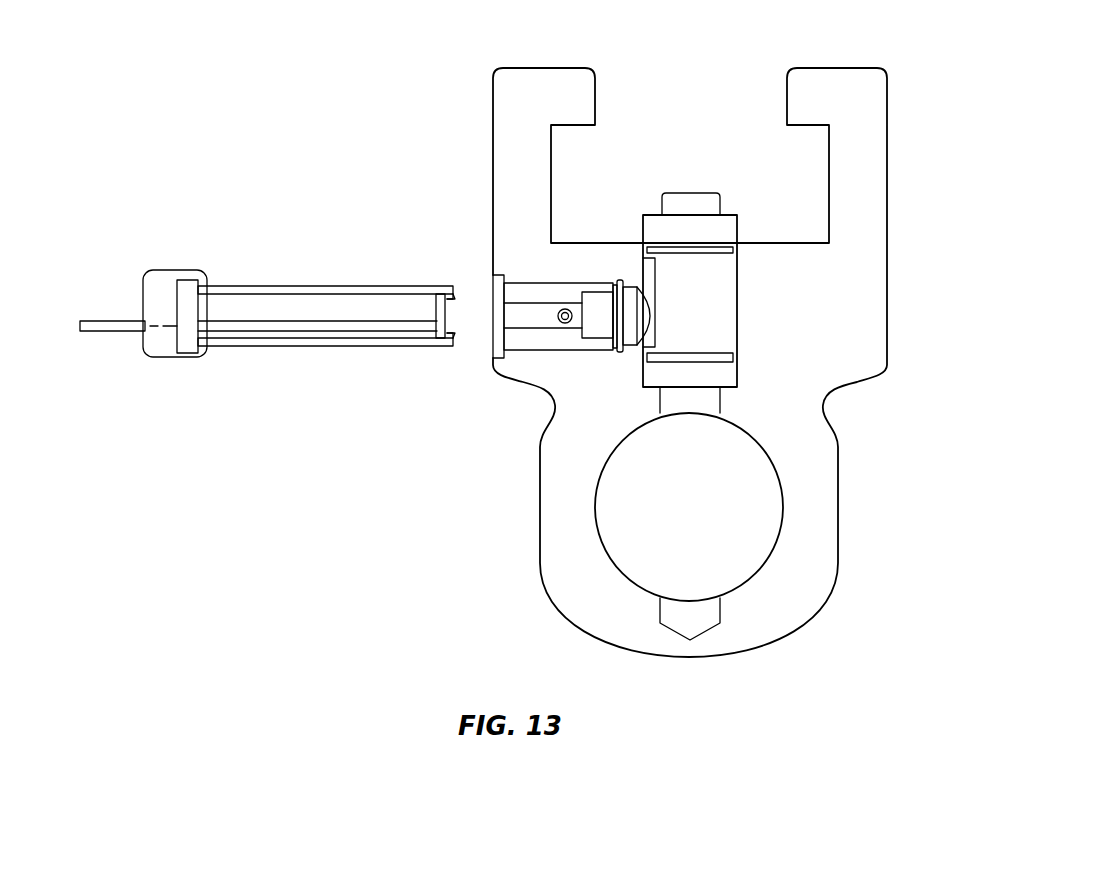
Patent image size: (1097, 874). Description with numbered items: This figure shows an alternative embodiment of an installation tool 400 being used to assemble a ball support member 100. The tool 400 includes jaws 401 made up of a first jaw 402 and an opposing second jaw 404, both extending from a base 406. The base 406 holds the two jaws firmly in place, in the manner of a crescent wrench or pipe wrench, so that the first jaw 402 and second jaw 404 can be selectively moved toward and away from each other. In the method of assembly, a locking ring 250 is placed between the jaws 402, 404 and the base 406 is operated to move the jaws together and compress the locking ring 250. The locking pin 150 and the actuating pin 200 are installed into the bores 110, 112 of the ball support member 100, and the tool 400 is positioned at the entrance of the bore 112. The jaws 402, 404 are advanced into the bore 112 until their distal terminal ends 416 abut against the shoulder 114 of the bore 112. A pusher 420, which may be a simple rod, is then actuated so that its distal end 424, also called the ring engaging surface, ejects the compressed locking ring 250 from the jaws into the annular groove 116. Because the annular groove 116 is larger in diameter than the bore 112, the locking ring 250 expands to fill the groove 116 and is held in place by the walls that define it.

The ball support member 100 is at (490, 66).
The bore 110 is at (738, 266).
The bore 112 is at (612, 288).
The shoulder 114 is at (618, 352).
The annular groove 116 is at (628, 348).
The locking pin 150 is at (690, 205).
The actuating pin 200 is at (597, 295).
The locking ring 250 is at (449, 316).
The tool 400 is at (343, 254).
The jaws 401 is at (445, 270).
The first jaw 402 is at (248, 286).
The second jaw 404 is at (242, 346).
The base 406 is at (158, 270).
The distal terminal ends 416 is at (460, 292).
The pusher 420 is at (110, 320).
The distal end 424 is at (433, 320).